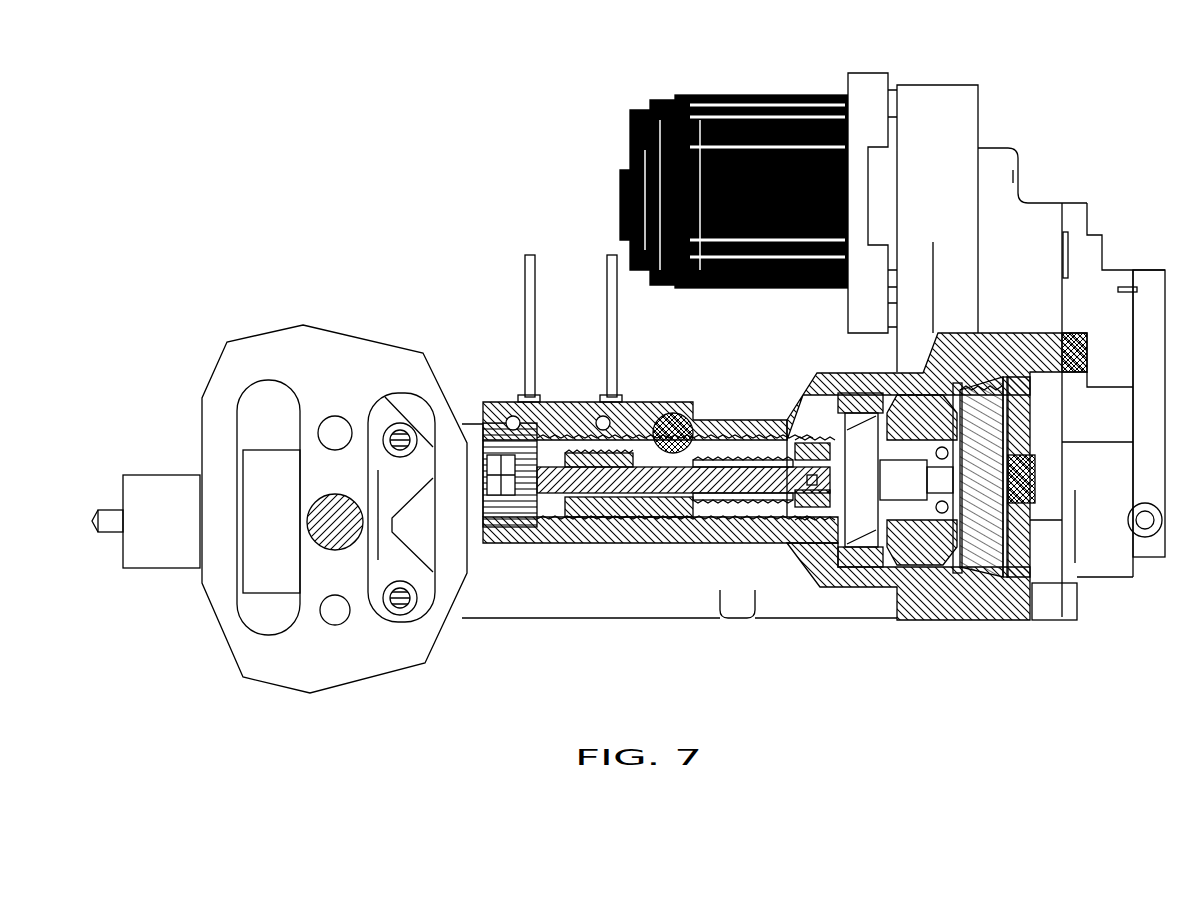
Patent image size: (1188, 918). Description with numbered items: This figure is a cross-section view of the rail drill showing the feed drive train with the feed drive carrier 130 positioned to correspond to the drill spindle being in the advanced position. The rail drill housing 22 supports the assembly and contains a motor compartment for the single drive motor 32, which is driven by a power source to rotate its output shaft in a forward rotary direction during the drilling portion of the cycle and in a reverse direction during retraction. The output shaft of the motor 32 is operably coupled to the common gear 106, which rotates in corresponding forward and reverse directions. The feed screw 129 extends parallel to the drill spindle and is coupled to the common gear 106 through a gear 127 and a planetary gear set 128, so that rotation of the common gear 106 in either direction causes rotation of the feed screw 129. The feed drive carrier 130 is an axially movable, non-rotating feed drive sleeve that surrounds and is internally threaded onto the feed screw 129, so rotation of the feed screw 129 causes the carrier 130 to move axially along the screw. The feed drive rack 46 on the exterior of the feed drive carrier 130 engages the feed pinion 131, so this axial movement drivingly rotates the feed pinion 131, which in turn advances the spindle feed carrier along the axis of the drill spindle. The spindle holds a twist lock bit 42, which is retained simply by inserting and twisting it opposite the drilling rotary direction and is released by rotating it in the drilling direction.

The rail drill housing 22 is at (963, 122).
The single drive motor 32 is at (745, 98).
The twist lock bit 42 is at (165, 547).
The feed drive rack 46 is at (607, 453).
The common gear 106 is at (1003, 380).
The gear 127 is at (987, 542).
The planetary gear set 128 is at (860, 538).
The feed screw 129 is at (737, 533).
The feed drive carrier 130 is at (642, 452).
The feed pinion 131 is at (693, 427).